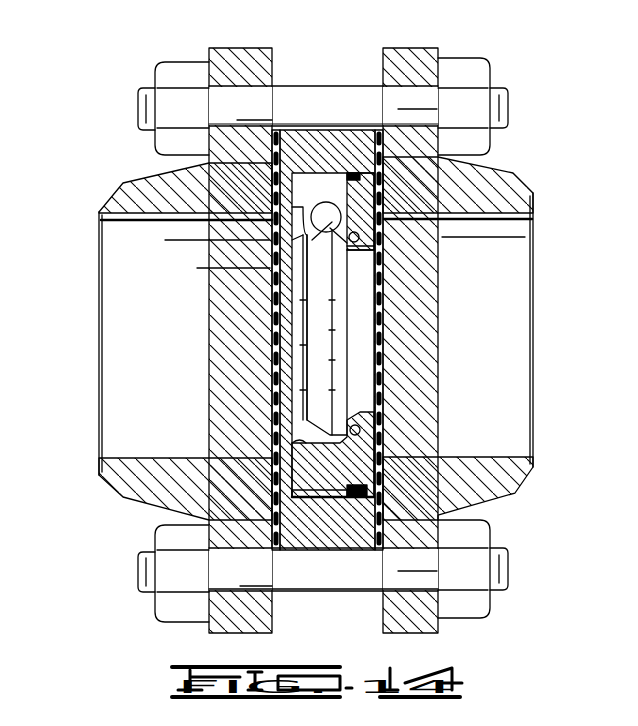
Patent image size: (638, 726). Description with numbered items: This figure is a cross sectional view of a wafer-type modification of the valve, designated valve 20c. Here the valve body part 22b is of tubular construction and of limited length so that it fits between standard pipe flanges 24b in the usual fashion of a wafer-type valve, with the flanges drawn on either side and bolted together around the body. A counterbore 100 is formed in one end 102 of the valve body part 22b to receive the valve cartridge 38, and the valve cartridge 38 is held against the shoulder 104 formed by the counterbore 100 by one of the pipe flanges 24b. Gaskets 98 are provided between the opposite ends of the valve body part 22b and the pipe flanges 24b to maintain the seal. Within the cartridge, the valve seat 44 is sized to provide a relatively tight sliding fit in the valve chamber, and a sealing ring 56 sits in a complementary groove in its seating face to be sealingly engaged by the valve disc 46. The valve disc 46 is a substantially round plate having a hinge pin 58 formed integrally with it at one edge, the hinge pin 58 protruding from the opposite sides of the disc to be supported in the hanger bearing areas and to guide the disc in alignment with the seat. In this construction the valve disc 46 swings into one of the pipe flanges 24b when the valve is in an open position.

The valve 20c is at (138, 92).
The pipe flanges 24b is at (217, 48).
The valve body part 22b is at (303, 138).
The valve seat 44 is at (385, 237).
The hinge pin 58 is at (382, 279).
The valve disc 46 is at (353, 360).
The sealing ring 56 is at (386, 412).
The valve cartridge 38 is at (385, 437).
The gaskets 98 is at (413, 457).
The shoulder 104 is at (267, 458).
The counterbore 100 is at (316, 500).
The end of the valve body part 102 is at (360, 500).